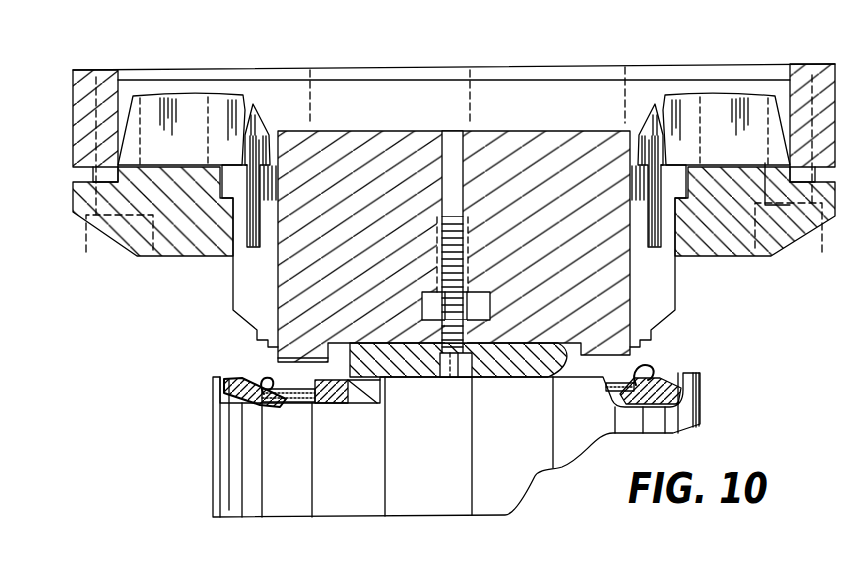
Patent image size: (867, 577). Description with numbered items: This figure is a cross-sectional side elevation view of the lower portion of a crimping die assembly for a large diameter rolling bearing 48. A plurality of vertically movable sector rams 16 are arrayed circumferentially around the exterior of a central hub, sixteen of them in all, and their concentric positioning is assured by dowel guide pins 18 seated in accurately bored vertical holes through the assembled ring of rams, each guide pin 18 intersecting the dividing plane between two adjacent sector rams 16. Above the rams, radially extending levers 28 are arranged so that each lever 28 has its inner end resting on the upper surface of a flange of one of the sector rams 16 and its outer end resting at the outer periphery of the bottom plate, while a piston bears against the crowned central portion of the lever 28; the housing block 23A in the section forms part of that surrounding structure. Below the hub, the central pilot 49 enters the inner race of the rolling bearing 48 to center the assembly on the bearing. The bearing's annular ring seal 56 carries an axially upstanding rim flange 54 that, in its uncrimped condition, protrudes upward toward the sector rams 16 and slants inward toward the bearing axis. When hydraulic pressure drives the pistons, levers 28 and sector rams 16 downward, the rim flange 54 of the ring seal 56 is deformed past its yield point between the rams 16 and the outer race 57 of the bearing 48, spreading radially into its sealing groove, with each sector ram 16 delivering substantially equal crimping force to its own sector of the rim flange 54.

The sector ram 16 is at (247, 289).
The dowel guide pin 18 is at (254, 108).
The housing block 23A is at (186, 236).
The lever 28 is at (193, 115).
The rolling bearing 48 is at (212, 482).
The central pilot 49 is at (411, 378).
The rim flange 54 is at (270, 378).
The annular ring seal 56 is at (294, 383).
The outer race 57 is at (212, 379).